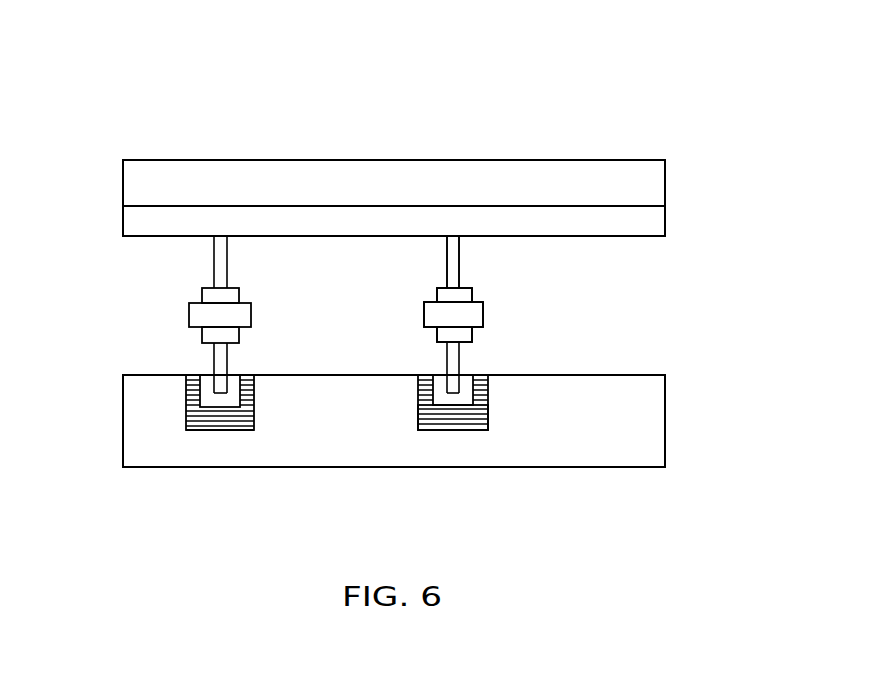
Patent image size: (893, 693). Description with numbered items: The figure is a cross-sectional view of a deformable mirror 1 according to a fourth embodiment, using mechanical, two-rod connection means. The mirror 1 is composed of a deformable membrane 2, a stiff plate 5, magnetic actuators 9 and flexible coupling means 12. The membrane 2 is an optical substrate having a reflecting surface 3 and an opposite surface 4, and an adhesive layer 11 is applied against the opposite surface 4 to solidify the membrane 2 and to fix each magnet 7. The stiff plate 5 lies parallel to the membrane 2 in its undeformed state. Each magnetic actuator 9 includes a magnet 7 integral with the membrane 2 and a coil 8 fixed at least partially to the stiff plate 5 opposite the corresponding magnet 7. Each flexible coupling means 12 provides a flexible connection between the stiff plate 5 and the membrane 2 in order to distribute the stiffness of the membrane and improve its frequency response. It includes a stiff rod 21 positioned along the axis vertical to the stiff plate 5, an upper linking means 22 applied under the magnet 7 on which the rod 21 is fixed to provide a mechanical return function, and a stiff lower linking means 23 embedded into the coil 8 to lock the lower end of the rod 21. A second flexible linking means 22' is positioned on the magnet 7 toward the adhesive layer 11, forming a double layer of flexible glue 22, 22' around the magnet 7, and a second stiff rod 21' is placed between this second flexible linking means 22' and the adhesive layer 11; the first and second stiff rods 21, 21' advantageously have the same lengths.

The deformable mirror 1 is at (343, 160).
The deformable membrane 2 is at (605, 178).
The reflecting surface 3 is at (195, 160).
The opposite surface 4 is at (148, 207).
The stiff plate 5 is at (625, 427).
The magnet 7 is at (200, 313).
The coil 8 is at (187, 417).
The magnetic actuator 9 is at (210, 430).
The adhesive layer 11 is at (645, 218).
The flexible coupling means 12 is at (500, 308).
The stiff rod 21 is at (520, 362).
The second stiff rod 21' is at (509, 262).
The upper linking means 22 is at (401, 346).
The second flexible linking means 22' is at (395, 275).
The lower linking means 23 is at (465, 398).